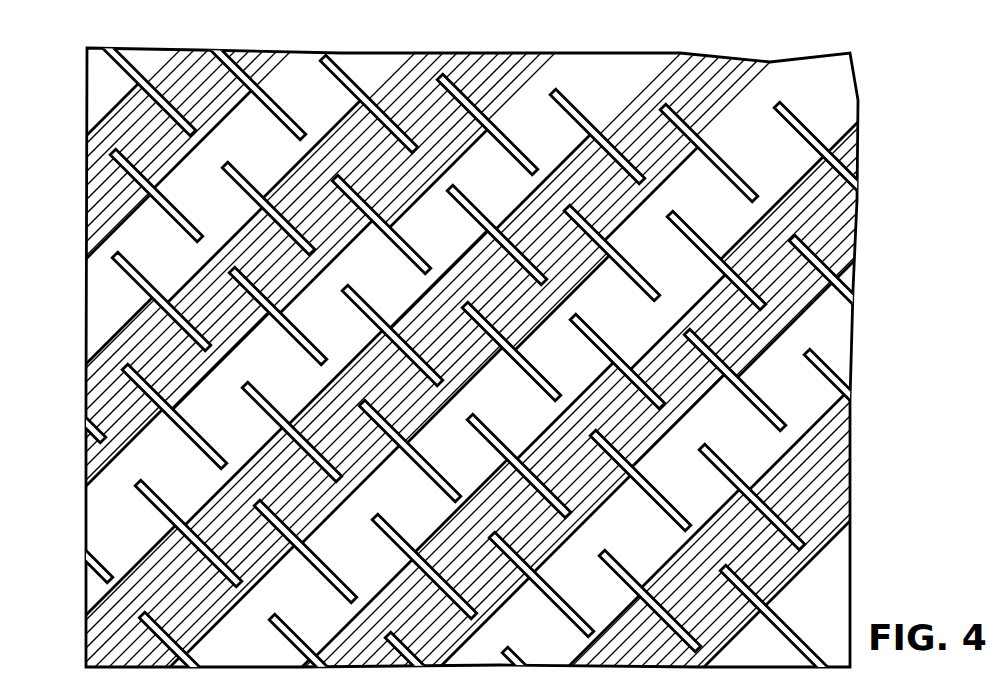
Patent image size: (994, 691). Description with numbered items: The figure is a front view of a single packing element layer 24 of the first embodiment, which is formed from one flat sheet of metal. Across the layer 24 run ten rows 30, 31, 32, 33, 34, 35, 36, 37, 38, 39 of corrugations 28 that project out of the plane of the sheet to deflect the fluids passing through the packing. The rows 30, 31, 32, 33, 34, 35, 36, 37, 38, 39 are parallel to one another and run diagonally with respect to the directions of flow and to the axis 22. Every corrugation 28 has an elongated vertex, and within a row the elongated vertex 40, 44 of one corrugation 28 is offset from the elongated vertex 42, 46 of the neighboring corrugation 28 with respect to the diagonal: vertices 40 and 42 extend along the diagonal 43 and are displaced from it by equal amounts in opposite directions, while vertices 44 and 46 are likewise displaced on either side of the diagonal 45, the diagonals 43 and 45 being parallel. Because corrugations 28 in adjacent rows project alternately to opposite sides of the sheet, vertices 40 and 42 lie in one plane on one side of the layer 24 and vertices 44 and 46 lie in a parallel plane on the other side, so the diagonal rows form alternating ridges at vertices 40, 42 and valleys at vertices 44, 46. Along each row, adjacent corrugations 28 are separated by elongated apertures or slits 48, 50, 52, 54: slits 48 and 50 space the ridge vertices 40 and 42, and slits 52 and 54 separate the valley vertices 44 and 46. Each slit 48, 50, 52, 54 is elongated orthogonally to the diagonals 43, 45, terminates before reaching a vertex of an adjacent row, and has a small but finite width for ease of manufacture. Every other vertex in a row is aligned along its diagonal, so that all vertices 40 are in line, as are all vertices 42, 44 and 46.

The axis 22 is at (481, 16).
The layer 24 is at (906, 203).
The corrugation 28 is at (442, 354).
The row 30 is at (185, 47).
The row 31 is at (290, 49).
The row 32 is at (430, 50).
The row 33 is at (540, 50).
The row 34 is at (681, 48).
The row 35 is at (773, 50).
The row 36 is at (863, 151).
The row 37 is at (863, 253).
The row 38 is at (863, 404).
The row 39 is at (863, 561).
The elongated vertex 40 is at (381, 103).
The elongated vertex 42 is at (272, 188).
The diagonal 43 is at (82, 387).
The elongated vertex 44 is at (455, 170).
The diagonal 45 is at (82, 519).
The elongated vertex 46 is at (500, 96).
The slit 48 is at (340, 86).
The slit 50 is at (233, 181).
The slit 52 is at (420, 241).
The slit 54 is at (527, 159).